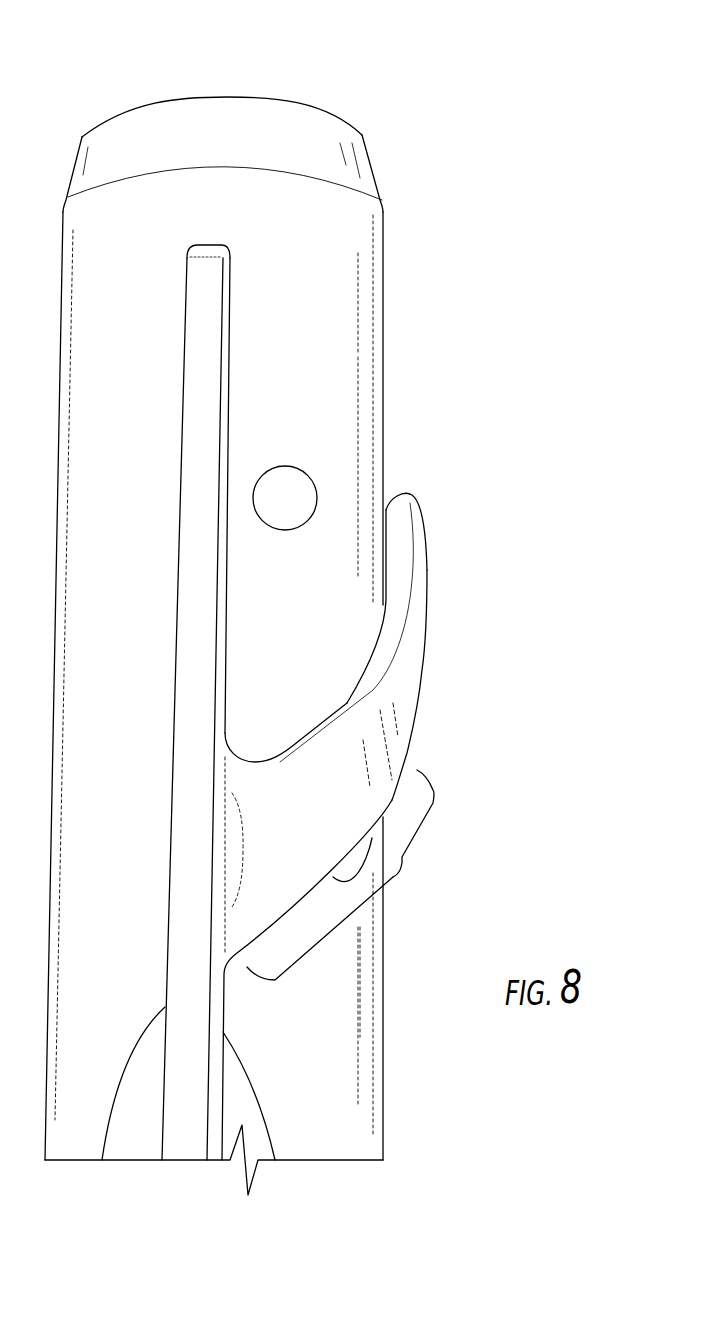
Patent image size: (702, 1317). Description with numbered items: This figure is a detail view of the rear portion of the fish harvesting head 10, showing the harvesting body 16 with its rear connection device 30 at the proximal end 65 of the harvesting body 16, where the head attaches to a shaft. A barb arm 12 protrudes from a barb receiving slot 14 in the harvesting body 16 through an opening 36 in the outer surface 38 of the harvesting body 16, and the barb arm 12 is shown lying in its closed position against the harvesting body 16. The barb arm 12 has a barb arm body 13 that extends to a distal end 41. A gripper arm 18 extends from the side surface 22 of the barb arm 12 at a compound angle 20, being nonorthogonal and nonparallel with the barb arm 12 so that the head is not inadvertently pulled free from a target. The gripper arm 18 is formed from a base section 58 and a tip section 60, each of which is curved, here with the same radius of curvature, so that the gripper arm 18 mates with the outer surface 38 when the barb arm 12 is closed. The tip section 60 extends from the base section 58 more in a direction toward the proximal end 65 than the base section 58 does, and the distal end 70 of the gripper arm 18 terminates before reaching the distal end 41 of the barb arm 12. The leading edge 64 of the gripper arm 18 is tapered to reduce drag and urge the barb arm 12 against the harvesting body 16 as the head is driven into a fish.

The fish harvesting head 10 is at (502, 82).
The barb arm 12 is at (195, 671).
The barb arm body 13 is at (178, 492).
The barb receiving slot 14 is at (263, 1142).
The harvesting body 16 is at (375, 302).
The gripper arm 18 is at (407, 640).
The compound angle 20 is at (493, 718).
The side surface 22 is at (223, 712).
The rear connection device 30 is at (285, 106).
The opening 36 is at (252, 1122).
The outer surface 38 is at (307, 1031).
The distal end 41 is at (206, 247).
The base section 58 is at (392, 876).
The tip section 60 is at (437, 497).
The leading edge 64 is at (342, 878).
The proximal end 65 is at (192, 100).
The distal end 70 is at (402, 493).